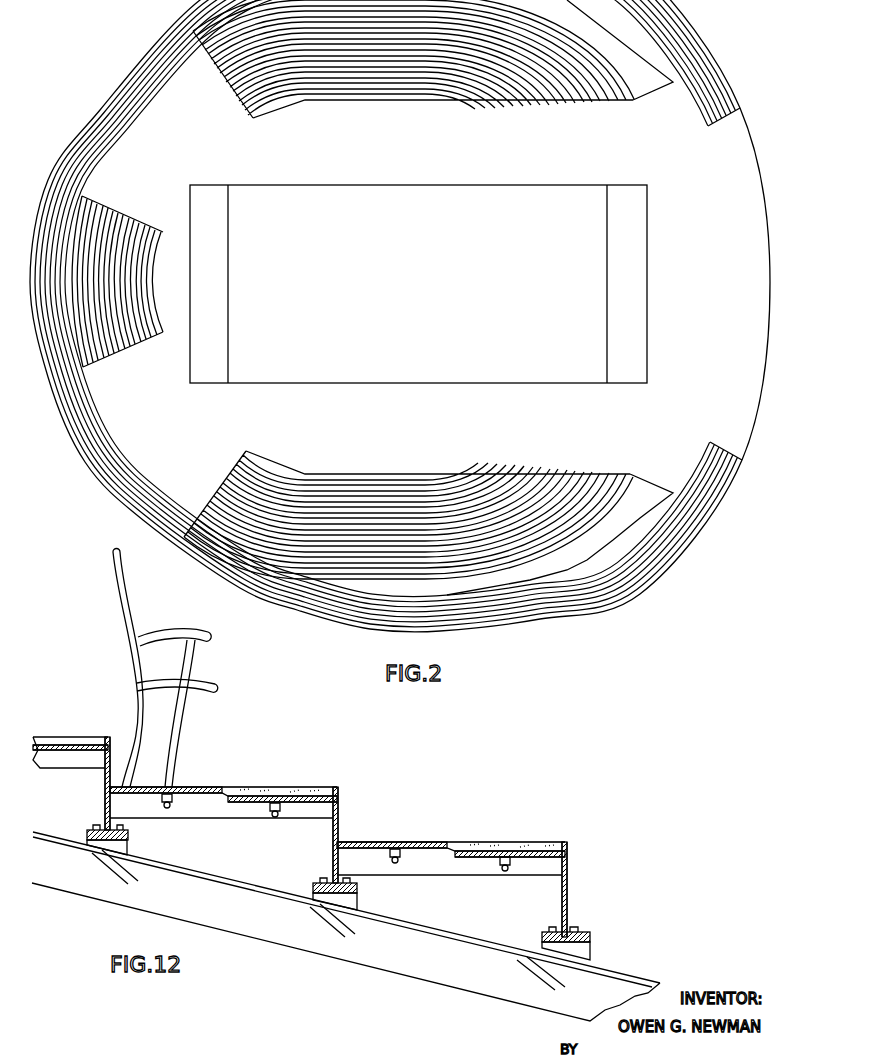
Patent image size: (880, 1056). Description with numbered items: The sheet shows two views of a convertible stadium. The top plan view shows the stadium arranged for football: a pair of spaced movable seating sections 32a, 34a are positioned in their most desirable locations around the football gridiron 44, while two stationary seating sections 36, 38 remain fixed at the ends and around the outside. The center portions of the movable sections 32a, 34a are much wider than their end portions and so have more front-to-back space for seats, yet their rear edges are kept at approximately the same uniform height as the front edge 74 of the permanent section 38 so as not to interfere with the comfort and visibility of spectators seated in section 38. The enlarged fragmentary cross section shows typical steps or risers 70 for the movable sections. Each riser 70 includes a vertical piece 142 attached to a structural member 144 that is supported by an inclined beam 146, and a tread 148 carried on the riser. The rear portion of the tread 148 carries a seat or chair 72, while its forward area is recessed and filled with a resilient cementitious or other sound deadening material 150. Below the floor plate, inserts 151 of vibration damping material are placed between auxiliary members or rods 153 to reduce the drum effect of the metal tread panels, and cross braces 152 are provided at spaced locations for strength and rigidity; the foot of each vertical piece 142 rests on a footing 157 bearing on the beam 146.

In FIG. 2, the movable seating section 32a is at (390, 101).
In FIG. 2, the movable seating section 34a is at (348, 600).
In FIG. 2, the stationary seating section 36 is at (106, 199).
In FIG. 2, the stationary seating section 38 is at (122, 439).
In FIG. 2, the front edge 74 is at (140, 468).
In FIG. 2, the football gridiron 44 is at (476, 181).
In FIG. 12, the seat 72 is at (180, 719).
In FIG. 12, the step or riser 70 is at (366, 832).
In FIG. 12, the vertical piece 142 is at (328, 833).
In FIG. 12, the structural member 144 is at (128, 847).
In FIG. 12, the beam 146 is at (412, 966).
In FIG. 12, the tread 148 is at (185, 789).
In FIG. 12, the sound deadening material 150 is at (274, 790).
In FIG. 12, the insert 151 is at (162, 800).
In FIG. 12, the cross brace 152 is at (221, 818).
In FIG. 12, the auxiliary member or rod 153 is at (273, 815).
In FIG. 12, the footing 157 is at (313, 893).